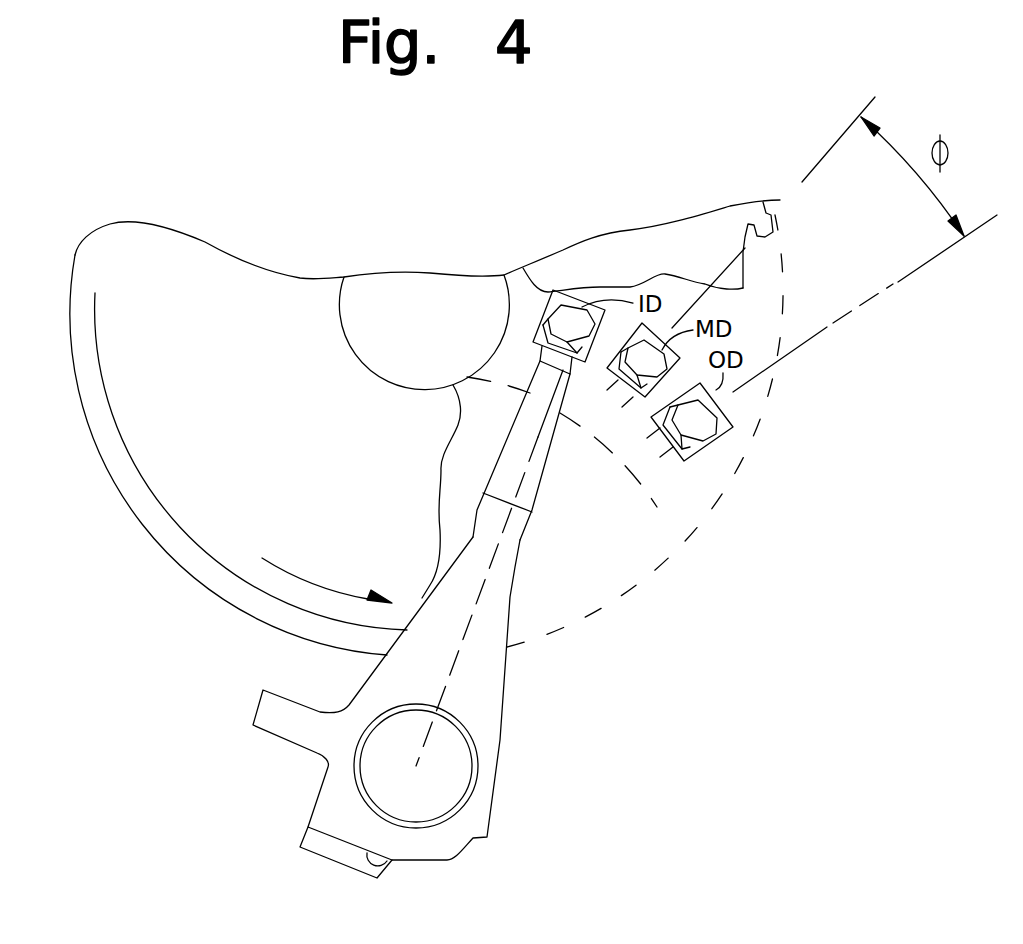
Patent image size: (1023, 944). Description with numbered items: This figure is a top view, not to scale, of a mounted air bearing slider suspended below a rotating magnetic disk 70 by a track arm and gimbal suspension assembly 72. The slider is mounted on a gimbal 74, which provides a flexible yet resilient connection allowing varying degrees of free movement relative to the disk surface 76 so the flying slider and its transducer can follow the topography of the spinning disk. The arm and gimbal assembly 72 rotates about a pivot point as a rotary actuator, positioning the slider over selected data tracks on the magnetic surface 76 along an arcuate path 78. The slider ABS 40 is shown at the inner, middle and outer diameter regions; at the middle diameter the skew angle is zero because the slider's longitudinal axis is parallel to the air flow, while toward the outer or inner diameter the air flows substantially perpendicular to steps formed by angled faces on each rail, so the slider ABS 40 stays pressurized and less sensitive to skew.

The rotating magnetic disk 70 is at (162, 545).
The track arm and gimbal suspension assembly 72 is at (497, 798).
The gimbal 74 is at (536, 482).
The disk surface 76 is at (258, 441).
The arcuate path 78 is at (647, 490).
The slider ABS 40 is at (722, 469).